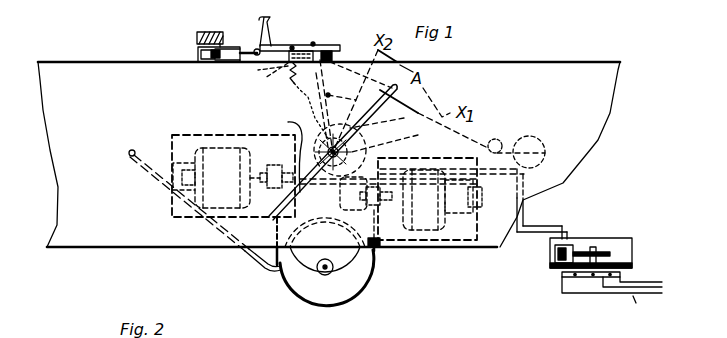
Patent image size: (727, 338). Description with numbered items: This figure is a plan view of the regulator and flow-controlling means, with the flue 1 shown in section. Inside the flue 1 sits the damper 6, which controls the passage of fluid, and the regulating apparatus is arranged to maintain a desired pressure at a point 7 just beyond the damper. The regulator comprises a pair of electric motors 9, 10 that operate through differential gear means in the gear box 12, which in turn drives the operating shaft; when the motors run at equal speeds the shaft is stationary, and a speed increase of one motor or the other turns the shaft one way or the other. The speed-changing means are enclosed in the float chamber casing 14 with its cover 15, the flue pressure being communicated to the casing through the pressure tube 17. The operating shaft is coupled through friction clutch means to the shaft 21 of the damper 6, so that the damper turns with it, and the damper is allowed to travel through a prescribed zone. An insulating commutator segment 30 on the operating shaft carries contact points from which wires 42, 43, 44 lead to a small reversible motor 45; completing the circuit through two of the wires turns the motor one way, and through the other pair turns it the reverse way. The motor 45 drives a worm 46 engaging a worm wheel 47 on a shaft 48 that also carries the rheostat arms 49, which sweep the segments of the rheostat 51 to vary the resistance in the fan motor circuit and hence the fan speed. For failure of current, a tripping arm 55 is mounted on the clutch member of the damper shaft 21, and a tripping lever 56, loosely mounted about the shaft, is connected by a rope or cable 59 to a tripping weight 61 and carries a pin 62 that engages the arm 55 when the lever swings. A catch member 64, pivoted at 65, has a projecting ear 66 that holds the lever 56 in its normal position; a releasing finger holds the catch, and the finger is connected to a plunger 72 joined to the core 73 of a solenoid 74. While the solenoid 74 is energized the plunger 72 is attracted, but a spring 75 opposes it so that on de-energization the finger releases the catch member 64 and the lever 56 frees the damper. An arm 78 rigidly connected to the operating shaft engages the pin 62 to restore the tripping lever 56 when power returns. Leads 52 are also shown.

The flue 1 is at (603, 64).
The damper 6 is at (293, 154).
The point in the flue 7 is at (130, 156).
The electric motor 9 is at (222, 195).
The electric motor 10 is at (429, 241).
The gear box 12 is at (377, 258).
The float chamber casing 14 is at (359, 298).
The cover 15 is at (333, 293).
The pressure tube 17 is at (262, 265).
The damper shaft 21 is at (330, 160).
The insulating commutator segment 30 is at (395, 139).
The wire 42 is at (549, 224).
The wire 43 is at (528, 227).
The wire 44 is at (531, 236).
The reversible motor 45 is at (573, 247).
The worm 46 is at (586, 251).
The worm wheel 47 is at (602, 254).
The shaft 48 is at (601, 266).
The rheostat arms 49 is at (596, 278).
The rheostat 51 is at (572, 278).
The lead wire 52 is at (638, 294).
The tripping arm 55 is at (387, 118).
The tripping lever 56 is at (293, 94).
The rope or cable 59 is at (350, 142).
The tripping weight 61 is at (541, 138).
The pin 62 is at (330, 95).
The catch member 64 is at (292, 46).
The pivot 65 is at (313, 42).
The projecting ear 66 is at (332, 57).
The plunger 72 is at (253, 57).
The core 73 is at (208, 62).
The solenoid 74 is at (197, 43).
The spring 75 is at (228, 48).
The arm 78 is at (343, 176).